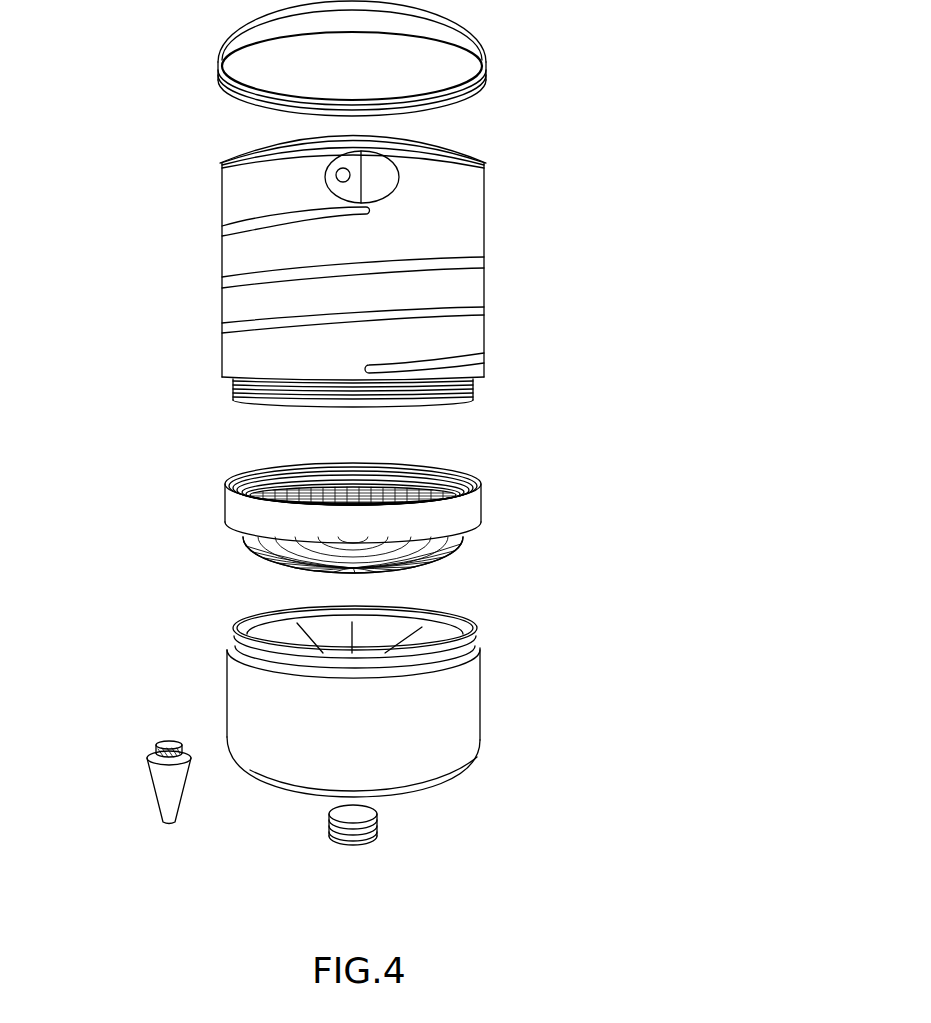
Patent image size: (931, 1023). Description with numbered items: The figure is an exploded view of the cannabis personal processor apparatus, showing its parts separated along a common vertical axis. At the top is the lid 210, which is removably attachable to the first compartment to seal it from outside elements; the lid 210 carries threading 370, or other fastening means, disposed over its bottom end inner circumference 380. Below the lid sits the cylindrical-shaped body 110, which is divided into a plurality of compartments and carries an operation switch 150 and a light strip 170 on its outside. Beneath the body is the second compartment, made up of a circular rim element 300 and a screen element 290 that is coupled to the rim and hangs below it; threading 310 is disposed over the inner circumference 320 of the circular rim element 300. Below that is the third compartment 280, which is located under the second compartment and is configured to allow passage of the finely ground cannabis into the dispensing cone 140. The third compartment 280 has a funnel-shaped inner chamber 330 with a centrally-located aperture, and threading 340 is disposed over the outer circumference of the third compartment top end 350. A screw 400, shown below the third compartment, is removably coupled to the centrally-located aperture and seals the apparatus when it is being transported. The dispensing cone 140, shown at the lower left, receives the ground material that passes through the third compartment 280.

The cylindrical-shaped body 110 is at (480, 333).
The dispensing cone 140 is at (150, 755).
The operation switch 150 is at (388, 176).
The light strip 170 is at (233, 323).
The lid 210 is at (472, 47).
The third compartment 280 is at (458, 733).
The screen element 290 is at (247, 545).
The circular rim element 300 is at (472, 510).
The threading 310 is at (433, 476).
The inner circumference 320 is at (400, 467).
The funnel-shaped inner chamber 330 is at (238, 633).
The threading 340 is at (478, 628).
The third compartment top end 350 is at (250, 657).
The threading 370 is at (464, 92).
The bottom end inner circumference 380 is at (222, 78).
The screw 400 is at (378, 822).